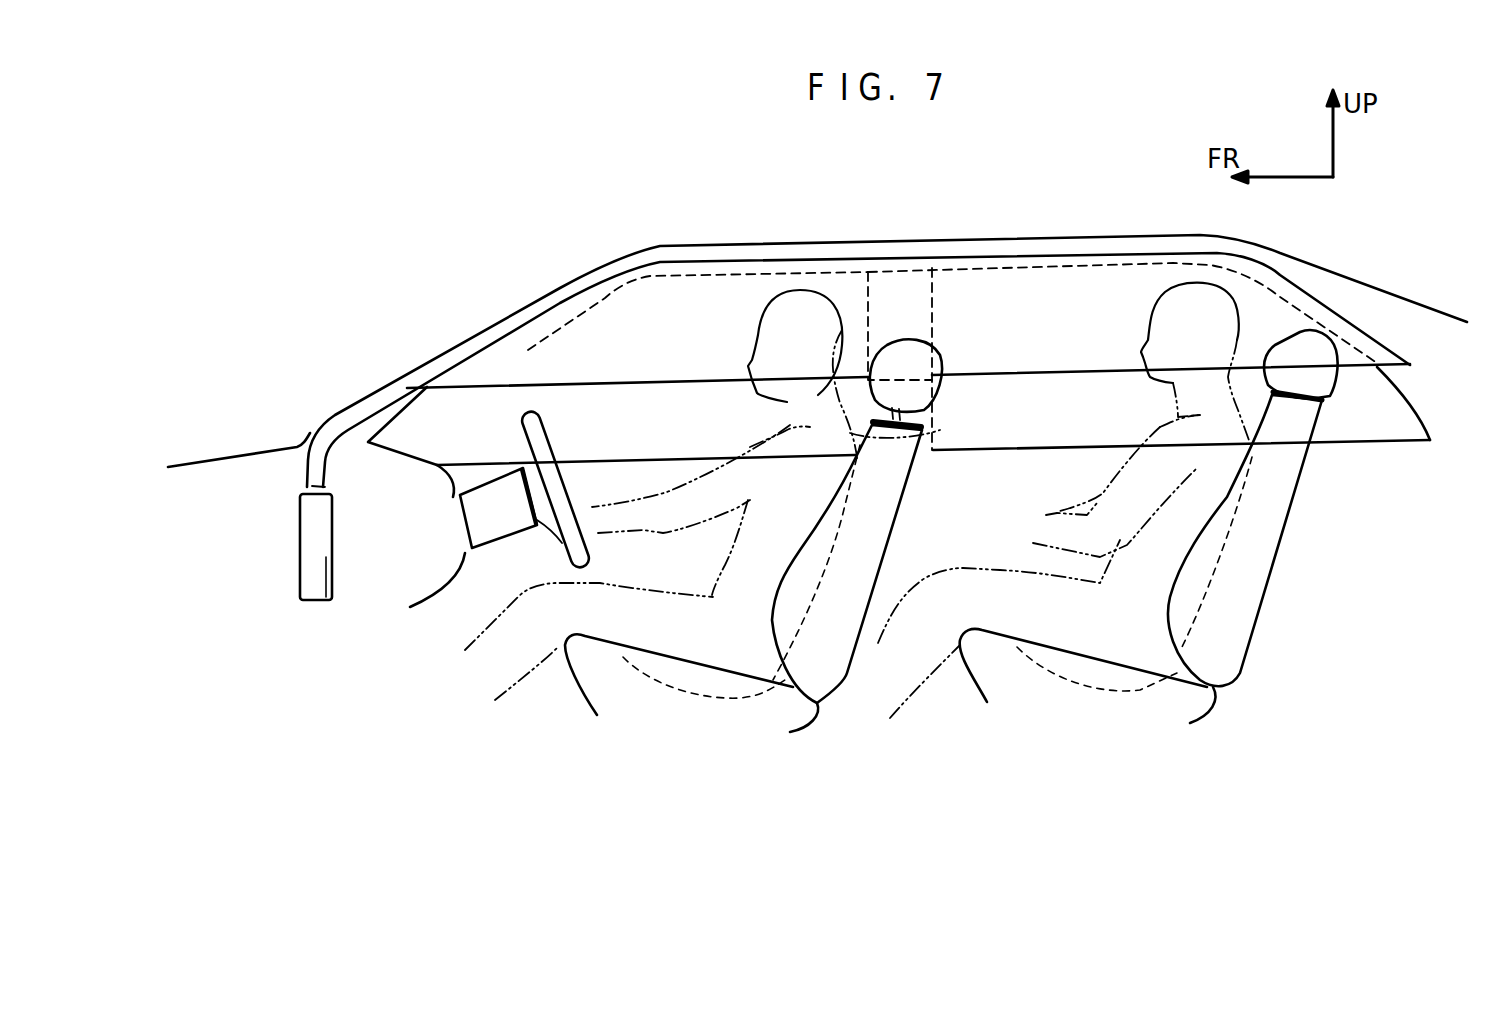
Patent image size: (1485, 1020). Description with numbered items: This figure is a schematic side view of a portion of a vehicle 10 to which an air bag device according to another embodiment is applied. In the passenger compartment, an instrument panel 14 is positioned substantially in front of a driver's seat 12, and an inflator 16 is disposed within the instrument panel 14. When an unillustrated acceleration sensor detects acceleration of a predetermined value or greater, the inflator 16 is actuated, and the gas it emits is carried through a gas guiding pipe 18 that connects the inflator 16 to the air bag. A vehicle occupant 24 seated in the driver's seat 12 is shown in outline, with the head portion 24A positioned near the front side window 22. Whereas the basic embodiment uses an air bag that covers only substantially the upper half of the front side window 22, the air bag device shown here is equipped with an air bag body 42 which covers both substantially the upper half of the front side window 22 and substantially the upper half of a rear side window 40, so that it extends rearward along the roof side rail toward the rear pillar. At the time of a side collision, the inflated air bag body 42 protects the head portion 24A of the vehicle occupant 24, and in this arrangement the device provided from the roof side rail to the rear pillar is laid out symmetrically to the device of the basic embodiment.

The vehicle 10 is at (889, 246).
The driver's seat 12 is at (889, 540).
The instrument panel 14 is at (434, 462).
The inflator 16 is at (310, 567).
The gas guiding pipe 18 is at (351, 412).
The front side window 22 is at (606, 421).
The vehicle occupant 24 is at (850, 432).
The head portion 24A is at (845, 322).
The rear side window 40 is at (1048, 401).
The air bag body 42 is at (703, 311).